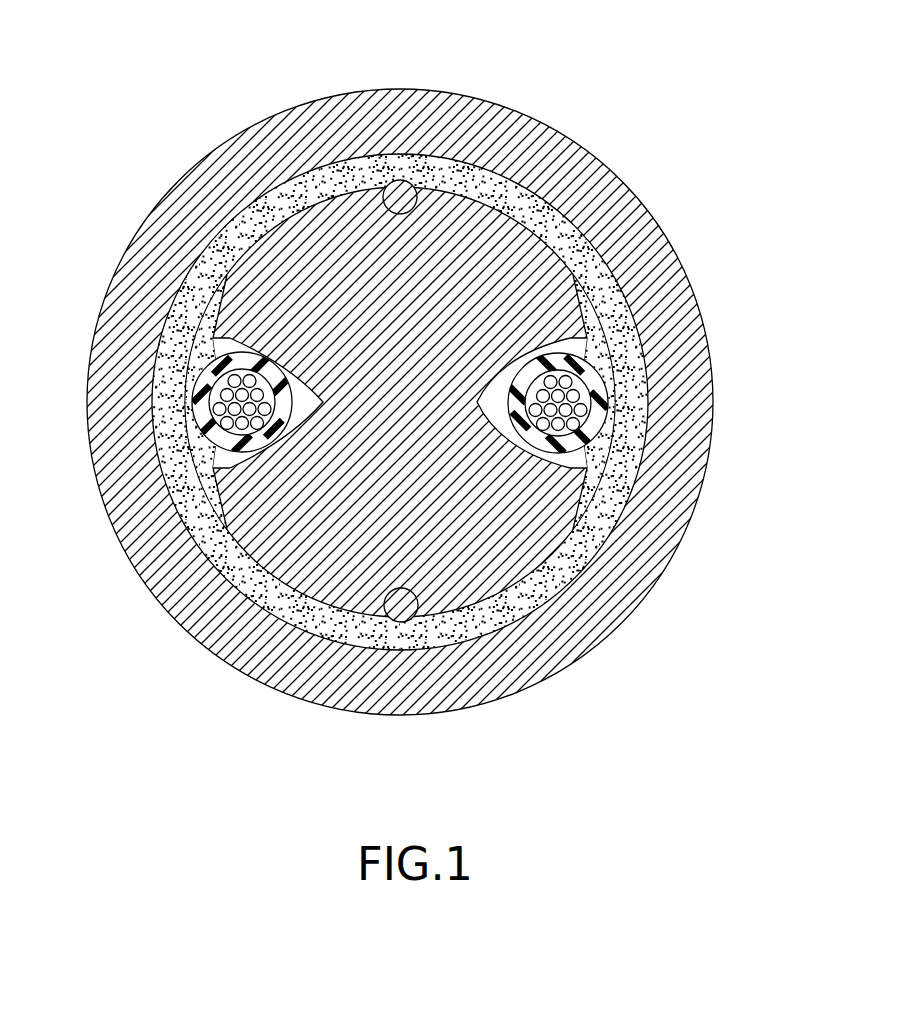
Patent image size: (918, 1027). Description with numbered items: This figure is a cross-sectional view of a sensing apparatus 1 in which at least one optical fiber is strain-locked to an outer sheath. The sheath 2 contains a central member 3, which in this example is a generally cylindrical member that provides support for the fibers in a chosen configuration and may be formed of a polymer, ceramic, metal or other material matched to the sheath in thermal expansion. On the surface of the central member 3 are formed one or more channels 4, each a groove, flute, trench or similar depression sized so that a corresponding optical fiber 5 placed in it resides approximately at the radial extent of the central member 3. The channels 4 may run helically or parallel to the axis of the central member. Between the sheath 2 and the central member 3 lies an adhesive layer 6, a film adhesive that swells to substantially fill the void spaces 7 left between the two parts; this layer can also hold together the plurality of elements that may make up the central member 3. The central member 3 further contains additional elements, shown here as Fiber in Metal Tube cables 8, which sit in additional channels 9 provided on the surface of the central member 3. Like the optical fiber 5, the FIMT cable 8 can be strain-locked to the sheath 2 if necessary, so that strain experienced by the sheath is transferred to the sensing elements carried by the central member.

The sensing apparatus 1 is at (158, 30).
The sheath 2 is at (572, 167).
The central member 3 is at (300, 286).
The channel 4 is at (413, 608).
The optical fiber 5 is at (403, 183).
The adhesive layer 6 is at (563, 563).
The void spaces 7 is at (243, 347).
The Fiber in Metal Tube (FIMT) cable 8 is at (602, 417).
The additional channel 9 is at (550, 355).